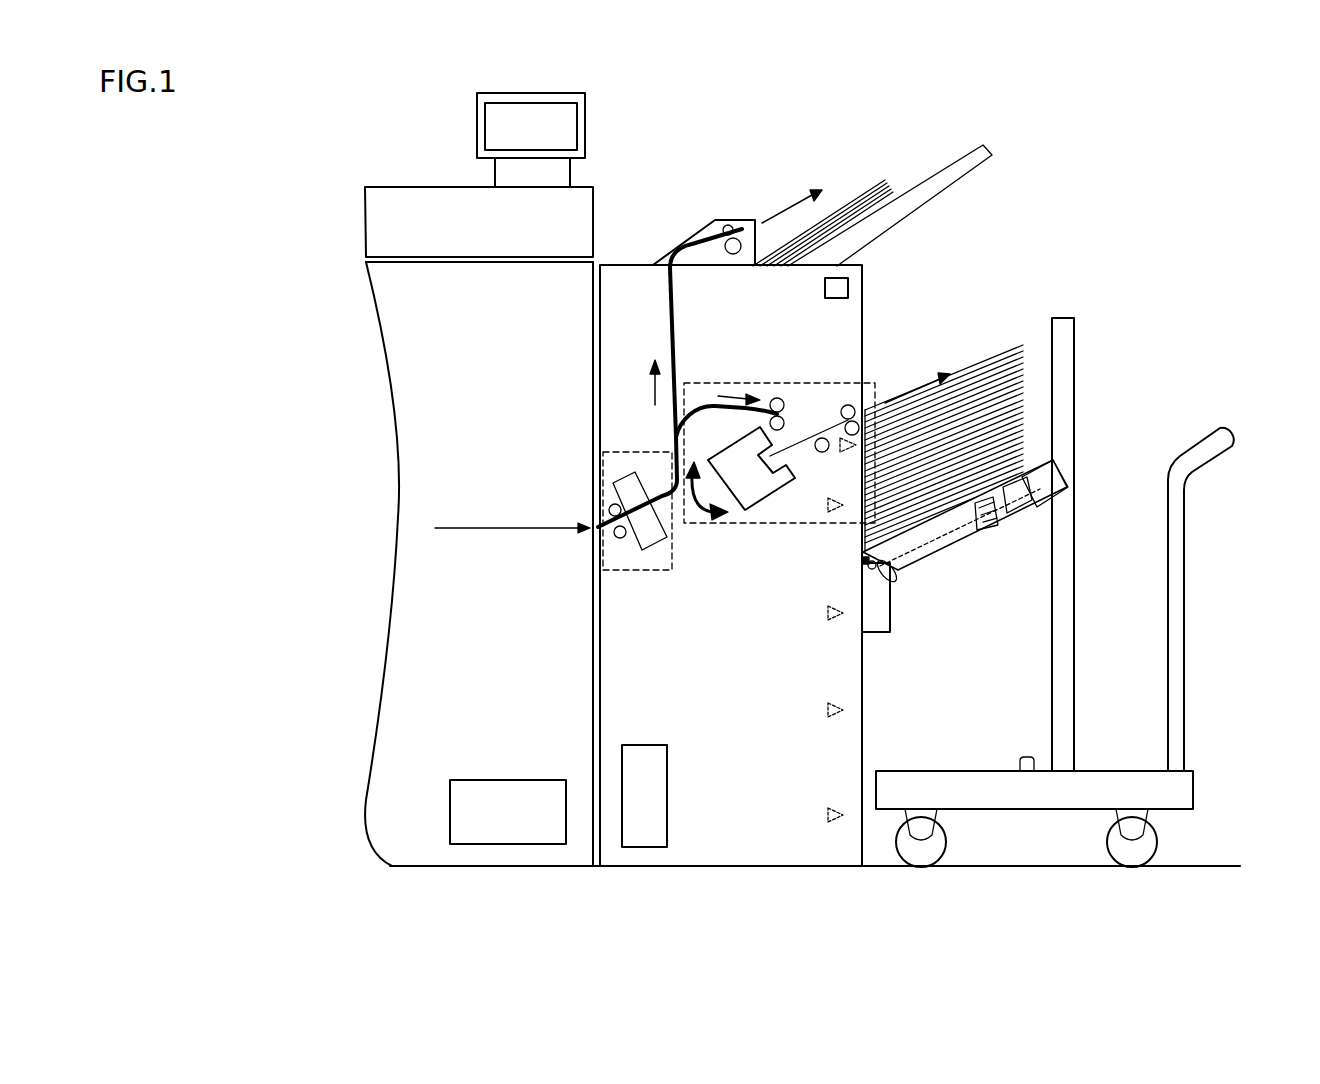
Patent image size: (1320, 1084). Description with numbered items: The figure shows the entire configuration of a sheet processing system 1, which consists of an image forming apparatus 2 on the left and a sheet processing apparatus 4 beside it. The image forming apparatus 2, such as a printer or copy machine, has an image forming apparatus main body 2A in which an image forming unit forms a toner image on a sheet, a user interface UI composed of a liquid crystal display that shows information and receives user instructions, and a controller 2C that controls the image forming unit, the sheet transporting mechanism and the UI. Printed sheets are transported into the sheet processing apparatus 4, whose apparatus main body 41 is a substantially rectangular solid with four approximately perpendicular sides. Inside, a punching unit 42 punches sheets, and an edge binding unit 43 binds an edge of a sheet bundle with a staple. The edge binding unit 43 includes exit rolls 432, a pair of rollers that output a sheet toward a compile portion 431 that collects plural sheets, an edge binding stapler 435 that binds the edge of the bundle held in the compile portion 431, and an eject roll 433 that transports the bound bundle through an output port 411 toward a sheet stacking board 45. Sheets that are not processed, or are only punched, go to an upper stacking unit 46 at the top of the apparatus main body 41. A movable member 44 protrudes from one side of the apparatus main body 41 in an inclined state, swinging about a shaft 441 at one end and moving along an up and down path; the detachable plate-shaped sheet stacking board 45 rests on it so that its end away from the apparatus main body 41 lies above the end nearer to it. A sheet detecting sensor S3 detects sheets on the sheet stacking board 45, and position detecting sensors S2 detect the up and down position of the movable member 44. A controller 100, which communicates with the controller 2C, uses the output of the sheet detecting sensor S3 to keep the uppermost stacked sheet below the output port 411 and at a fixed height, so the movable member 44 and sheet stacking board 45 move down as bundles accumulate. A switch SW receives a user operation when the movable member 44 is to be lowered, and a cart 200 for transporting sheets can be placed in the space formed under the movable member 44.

The sheet processing system 1 is at (1050, 142).
The image forming apparatus 2 is at (343, 160).
The image forming apparatus main body 2A is at (364, 806).
The controller 2C is at (475, 844).
The sheet processing apparatus 4 is at (651, 155).
The apparatus main body 41 is at (615, 263).
The punching unit 42 is at (625, 452).
The edge binding unit 43 is at (775, 428).
The movable member 44 is at (989, 511).
The sheet stacking board 45 is at (1040, 460).
The upper stacking unit 46 is at (926, 180).
The controller 100 is at (650, 847).
The cart 200 is at (1266, 329).
The output port 411 is at (872, 404).
The compile portion 431 is at (846, 404).
The exit rolls 432 is at (771, 402).
The eject roll 433 is at (818, 437).
The edge binding stapler 435 is at (745, 510).
The shaft 441 is at (895, 580).
The user interface UI is at (477, 127).
The switch SW is at (848, 288).
The position detecting sensors S2 is at (828, 505).
The sheet detecting sensor S3 is at (845, 452).